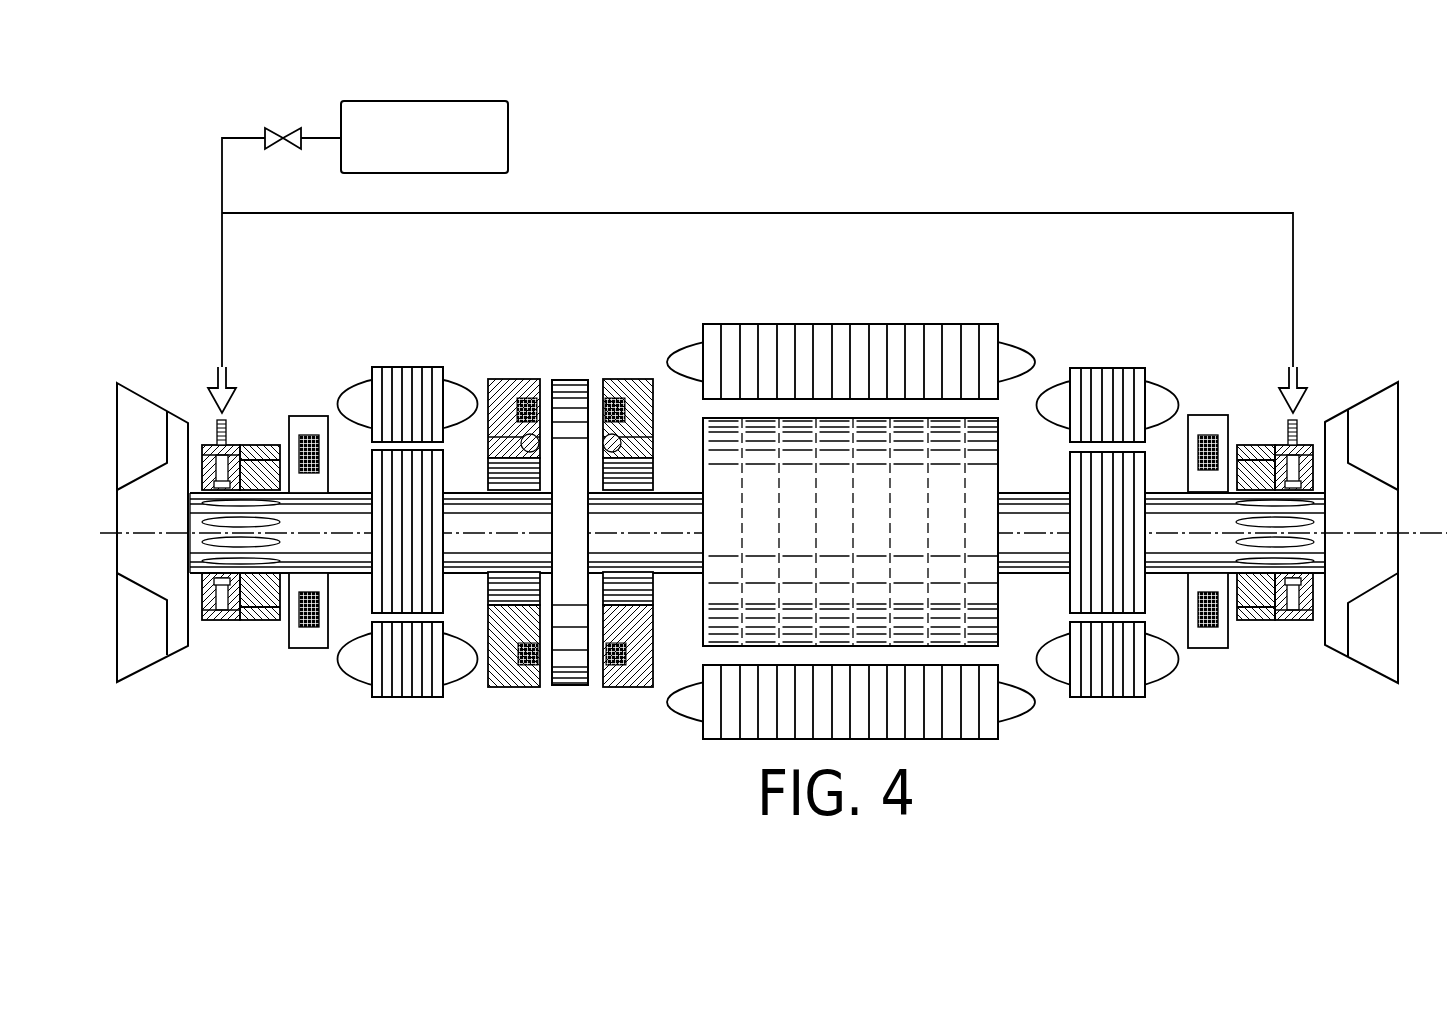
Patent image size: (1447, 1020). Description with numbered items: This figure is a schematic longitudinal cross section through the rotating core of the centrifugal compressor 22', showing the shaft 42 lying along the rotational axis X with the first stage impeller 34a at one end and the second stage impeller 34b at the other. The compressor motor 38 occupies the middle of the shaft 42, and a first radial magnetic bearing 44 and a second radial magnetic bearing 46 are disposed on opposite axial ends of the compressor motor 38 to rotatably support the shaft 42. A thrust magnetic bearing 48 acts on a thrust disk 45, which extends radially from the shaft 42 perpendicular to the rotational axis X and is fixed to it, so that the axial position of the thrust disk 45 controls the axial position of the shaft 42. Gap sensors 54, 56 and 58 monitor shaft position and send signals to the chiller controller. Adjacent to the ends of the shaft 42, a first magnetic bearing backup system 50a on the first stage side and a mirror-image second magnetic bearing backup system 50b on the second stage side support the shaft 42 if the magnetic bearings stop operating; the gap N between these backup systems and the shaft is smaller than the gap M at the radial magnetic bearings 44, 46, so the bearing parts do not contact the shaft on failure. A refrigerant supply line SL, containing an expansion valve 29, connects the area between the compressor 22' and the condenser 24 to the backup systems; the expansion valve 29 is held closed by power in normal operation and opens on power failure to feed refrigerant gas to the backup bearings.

The centrifugal compressor 22' is at (1196, 255).
The condenser 24 is at (432, 100).
The expansion valve 29 is at (283, 127).
The refrigerant supply line SL is at (220, 190).
The first stage impeller 34a is at (1372, 398).
The second stage impeller 34b is at (143, 398).
The compressor motor 38 is at (958, 310).
The shaft 42 is at (1167, 491).
The first radial magnetic bearing 44 is at (1108, 698).
The second radial magnetic bearing 46 is at (400, 698).
The thrust disk 45 is at (575, 379).
The thrust magnetic bearing 48 is at (620, 688).
The first magnetic bearing backup system 50a is at (1277, 626).
The second magnetic bearing backup system 50b is at (235, 624).
The gap sensor 54 is at (1210, 414).
The gap sensor 56 is at (302, 415).
The gap sensor 58 is at (600, 440).
The gap N is at (273, 575).
The gap M is at (432, 617).
The rotational axis X is at (1415, 531).